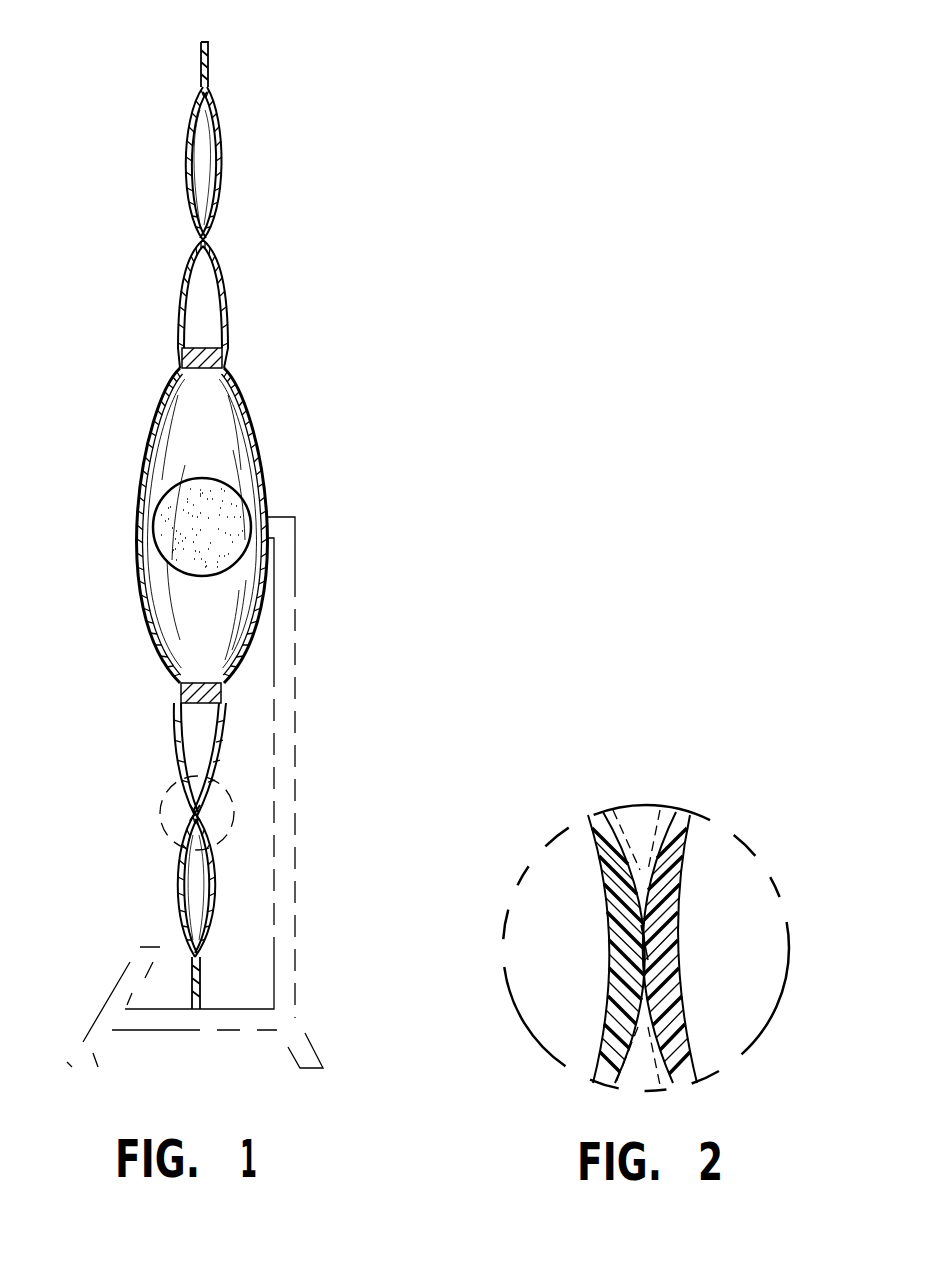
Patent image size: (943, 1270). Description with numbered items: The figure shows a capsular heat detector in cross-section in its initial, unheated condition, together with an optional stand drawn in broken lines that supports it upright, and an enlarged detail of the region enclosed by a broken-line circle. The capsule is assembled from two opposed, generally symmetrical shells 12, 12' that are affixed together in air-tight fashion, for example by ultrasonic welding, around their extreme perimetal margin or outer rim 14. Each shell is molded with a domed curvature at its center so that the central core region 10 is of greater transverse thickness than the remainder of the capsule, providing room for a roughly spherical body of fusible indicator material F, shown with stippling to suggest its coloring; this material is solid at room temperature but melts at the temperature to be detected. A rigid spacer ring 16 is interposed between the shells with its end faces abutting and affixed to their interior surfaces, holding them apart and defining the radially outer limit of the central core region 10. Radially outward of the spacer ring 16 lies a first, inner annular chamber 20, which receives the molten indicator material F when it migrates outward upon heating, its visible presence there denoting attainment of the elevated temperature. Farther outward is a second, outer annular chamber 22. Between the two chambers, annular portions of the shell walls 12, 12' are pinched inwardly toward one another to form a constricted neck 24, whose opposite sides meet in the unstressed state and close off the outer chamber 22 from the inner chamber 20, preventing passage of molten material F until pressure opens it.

In FIG. 1, the central core region 10 is at (206, 525).
In FIG. 1, the shell 12 is at (121, 525).
In FIG. 2, the shell 12 is at (585, 929).
In FIG. 1, the shell 12' is at (287, 525).
In FIG. 2, the shell 12' is at (710, 929).
In FIG. 1, the outer rim 14 is at (206, 55).
In FIG. 1, the spacer ring 16 is at (203, 683).
In FIG. 1, the first annular chamber 20 is at (196, 730).
In FIG. 2, the first annular chamber 20 is at (645, 815).
In FIG. 1, the second annular chamber 22 is at (195, 877).
In FIG. 2, the second annular chamber 22 is at (643, 1080).
In FIG. 1, the neck 24 is at (188, 815).
In FIG. 2, the neck 24 is at (673, 930).
In FIG. 1, the fusible indicator material F is at (170, 522).